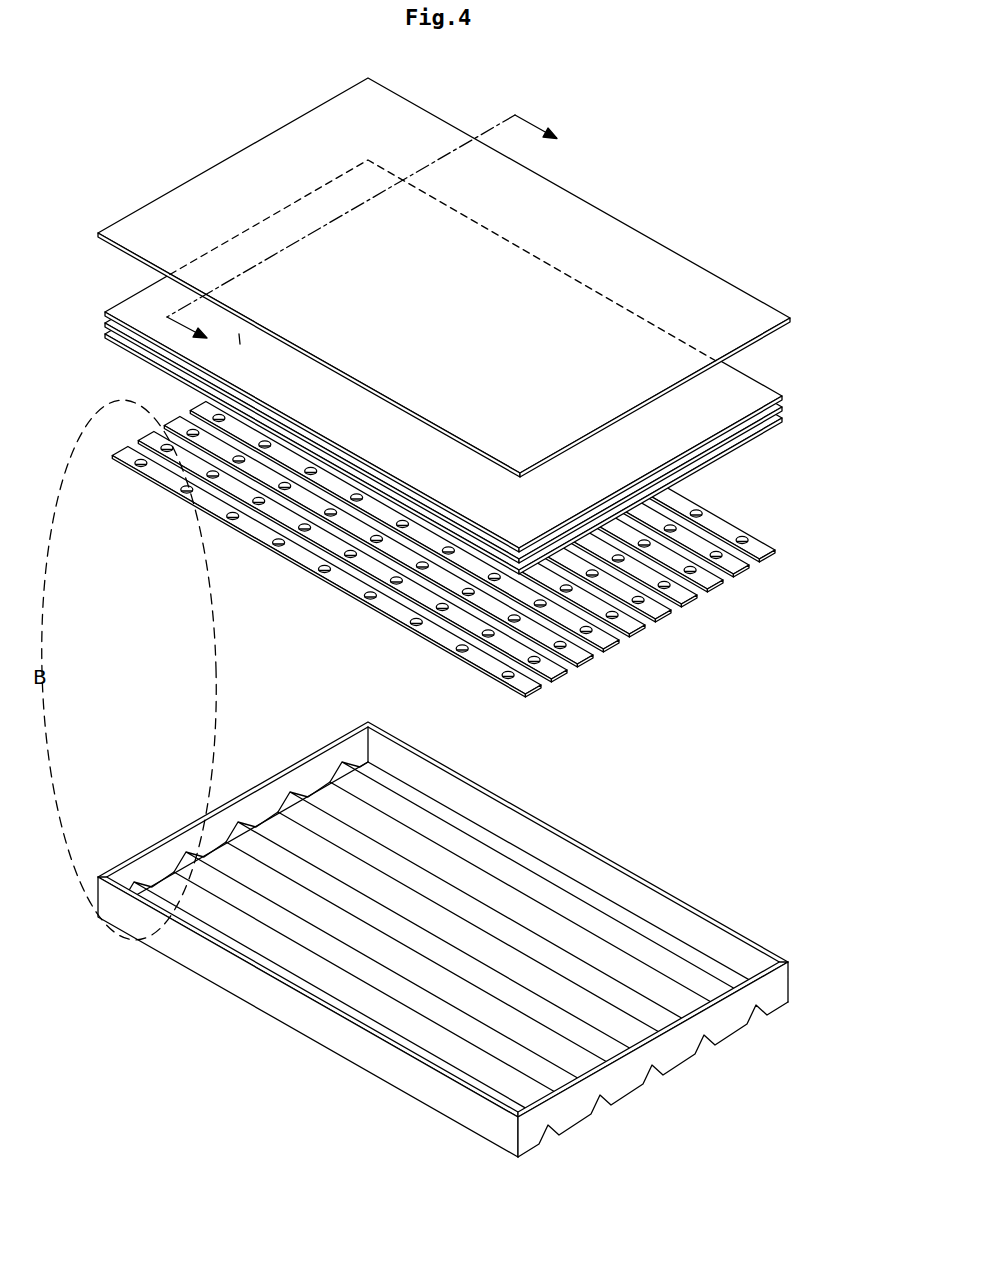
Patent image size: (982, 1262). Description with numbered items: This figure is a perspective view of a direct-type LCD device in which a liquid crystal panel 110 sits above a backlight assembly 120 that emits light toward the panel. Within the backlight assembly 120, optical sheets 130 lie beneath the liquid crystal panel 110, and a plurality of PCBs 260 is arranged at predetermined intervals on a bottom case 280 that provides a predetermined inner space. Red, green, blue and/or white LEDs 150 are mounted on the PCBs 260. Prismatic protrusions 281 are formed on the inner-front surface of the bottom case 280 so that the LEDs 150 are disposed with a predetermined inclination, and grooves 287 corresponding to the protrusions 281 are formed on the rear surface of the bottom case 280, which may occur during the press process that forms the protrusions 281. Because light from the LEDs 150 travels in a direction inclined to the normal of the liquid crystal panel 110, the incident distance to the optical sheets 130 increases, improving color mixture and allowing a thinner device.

The liquid crystal panel 110 is at (790, 318).
The backlight assembly 120 is at (504, 658).
The optical sheets 130 is at (787, 394).
The LEDs 150 is at (744, 536).
The PCBs 260 is at (773, 552).
The bottom case 280 is at (767, 947).
The protrusions 281 is at (678, 961).
The grooves 287 is at (675, 1079).